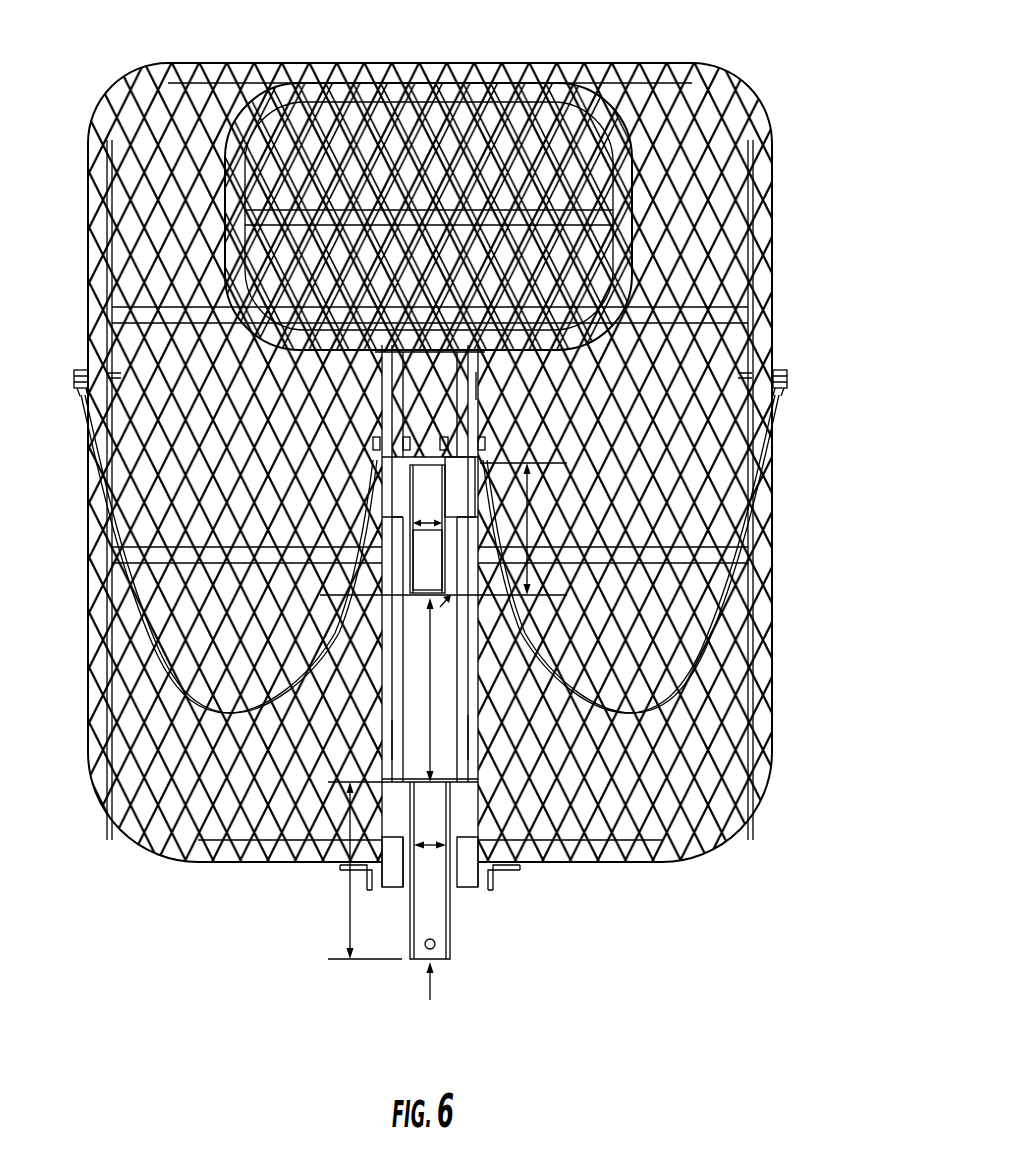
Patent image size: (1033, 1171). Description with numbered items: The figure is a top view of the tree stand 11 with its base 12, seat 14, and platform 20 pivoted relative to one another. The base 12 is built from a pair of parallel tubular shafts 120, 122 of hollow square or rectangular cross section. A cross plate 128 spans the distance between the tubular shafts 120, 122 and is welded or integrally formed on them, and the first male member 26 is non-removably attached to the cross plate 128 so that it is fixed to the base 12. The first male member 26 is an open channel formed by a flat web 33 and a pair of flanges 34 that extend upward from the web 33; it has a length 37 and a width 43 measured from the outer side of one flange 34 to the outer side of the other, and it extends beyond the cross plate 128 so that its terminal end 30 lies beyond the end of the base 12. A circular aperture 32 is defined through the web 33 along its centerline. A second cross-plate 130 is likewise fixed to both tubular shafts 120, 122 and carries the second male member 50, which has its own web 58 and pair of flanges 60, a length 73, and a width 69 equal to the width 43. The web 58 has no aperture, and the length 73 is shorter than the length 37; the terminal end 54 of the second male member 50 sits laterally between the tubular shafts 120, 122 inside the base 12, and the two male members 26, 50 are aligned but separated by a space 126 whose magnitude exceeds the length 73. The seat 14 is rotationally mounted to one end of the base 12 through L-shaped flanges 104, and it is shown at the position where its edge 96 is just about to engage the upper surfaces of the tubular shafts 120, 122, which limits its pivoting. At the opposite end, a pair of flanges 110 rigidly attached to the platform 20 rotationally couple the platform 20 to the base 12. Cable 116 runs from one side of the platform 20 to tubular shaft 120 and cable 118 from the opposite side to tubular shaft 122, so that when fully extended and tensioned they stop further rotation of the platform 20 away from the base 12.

The tree stand 11 is at (784, 76).
The base 12 is at (470, 690).
The seat 14 is at (633, 262).
The platform 20 is at (773, 313).
The first male member 26 is at (432, 922).
The terminal end 30 is at (430, 1000).
The aperture 32 is at (437, 949).
The web 33 is at (425, 905).
The flanges 34 is at (440, 945).
The length 37 is at (352, 900).
The width 43 is at (430, 840).
The second male member 50 is at (419, 497).
The terminal end 54 is at (450, 628).
The web 58 is at (419, 560).
The flanges 60 is at (395, 520).
The width 69 is at (376, 500).
The length 73 is at (532, 548).
The edge 96 is at (497, 360).
The flanges 104 is at (478, 385).
The flanges 110 is at (345, 868).
The cable 116 is at (132, 605).
The cable 118 is at (730, 557).
The tubular shaft 120 is at (386, 735).
The tubular shaft 122 is at (470, 730).
The space 126 is at (412, 680).
The cross plate 128 is at (462, 808).
The cross-plate 130 is at (465, 485).